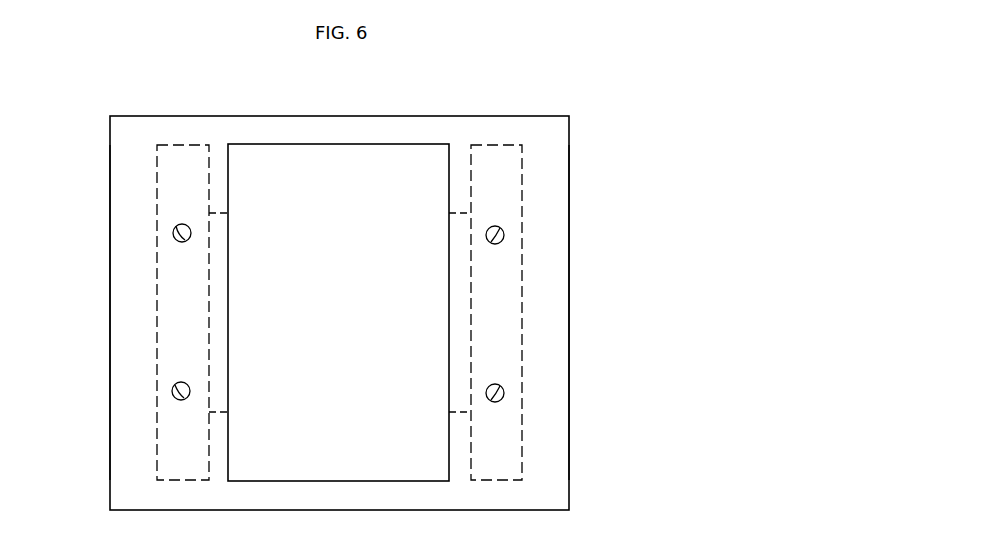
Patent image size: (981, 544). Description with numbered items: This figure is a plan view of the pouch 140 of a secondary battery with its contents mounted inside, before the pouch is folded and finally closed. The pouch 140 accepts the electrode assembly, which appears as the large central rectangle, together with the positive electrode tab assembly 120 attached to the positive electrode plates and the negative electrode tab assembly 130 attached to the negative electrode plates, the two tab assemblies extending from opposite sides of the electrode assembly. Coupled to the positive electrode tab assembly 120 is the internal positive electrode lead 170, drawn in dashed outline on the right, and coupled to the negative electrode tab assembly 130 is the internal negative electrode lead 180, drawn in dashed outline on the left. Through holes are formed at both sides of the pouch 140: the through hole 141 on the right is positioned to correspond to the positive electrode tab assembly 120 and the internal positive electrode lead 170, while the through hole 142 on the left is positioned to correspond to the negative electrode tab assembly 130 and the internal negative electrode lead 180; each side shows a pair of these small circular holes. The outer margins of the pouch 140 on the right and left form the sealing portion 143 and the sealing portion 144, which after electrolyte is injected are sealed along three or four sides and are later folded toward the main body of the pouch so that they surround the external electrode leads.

The pouch 140 is at (587, 105).
The negative electrode tab assembly 130 is at (212, 335).
The positive electrode tab assembly 120 is at (462, 338).
The internal negative electrode lead 180 is at (167, 288).
The internal positive electrode lead 170 is at (510, 291).
The through hole 142 is at (173, 231).
The through hole 141 is at (504, 229).
The sealing portion 144 is at (120, 162).
The sealing portion 143 is at (558, 165).